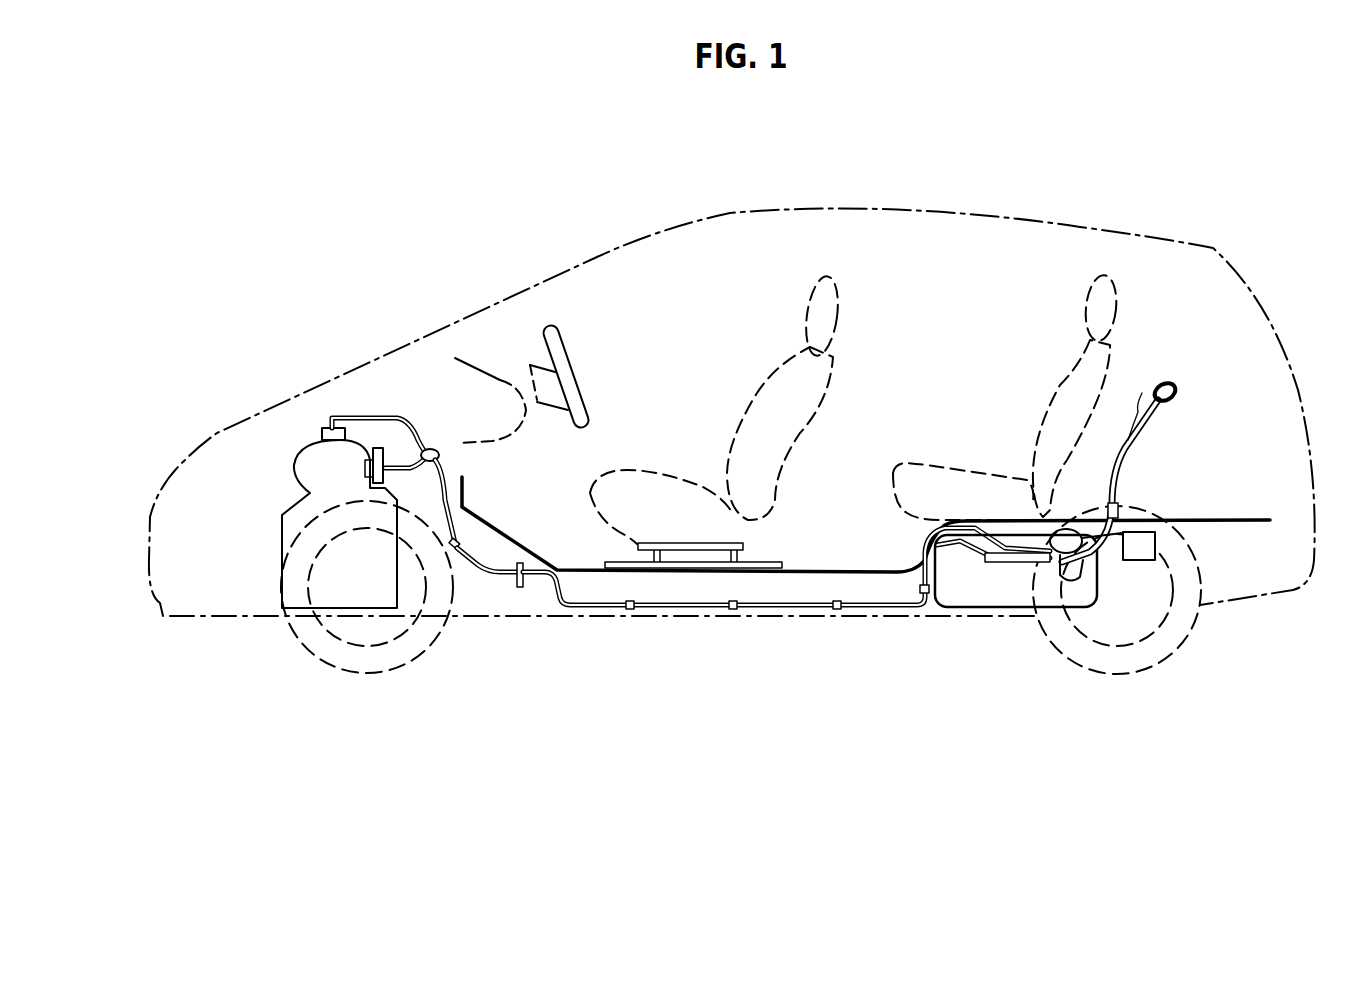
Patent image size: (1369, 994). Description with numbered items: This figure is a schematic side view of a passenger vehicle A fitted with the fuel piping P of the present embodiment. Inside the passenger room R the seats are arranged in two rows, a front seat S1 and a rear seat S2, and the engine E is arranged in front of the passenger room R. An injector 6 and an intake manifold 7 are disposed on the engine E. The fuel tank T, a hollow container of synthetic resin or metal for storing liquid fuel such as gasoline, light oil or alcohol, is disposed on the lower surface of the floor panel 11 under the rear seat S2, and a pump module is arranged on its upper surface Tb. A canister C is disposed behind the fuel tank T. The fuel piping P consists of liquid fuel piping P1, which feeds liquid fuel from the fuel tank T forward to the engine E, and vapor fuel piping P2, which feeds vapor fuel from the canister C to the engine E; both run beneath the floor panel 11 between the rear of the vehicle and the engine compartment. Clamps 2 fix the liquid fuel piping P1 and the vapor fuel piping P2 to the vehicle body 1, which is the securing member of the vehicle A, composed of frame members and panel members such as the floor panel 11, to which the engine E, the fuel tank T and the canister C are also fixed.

The vehicle A is at (538, 195).
The passenger room R is at (853, 238).
The front seat S1 is at (678, 360).
The rear seat S2 is at (966, 362).
The engine E is at (313, 470).
The injector 6 is at (327, 430).
The intake manifold 7 is at (387, 447).
The floor panel 11 is at (1233, 519).
The fuel piping P is at (715, 590).
The liquid fuel piping P1 is at (503, 577).
The vapor fuel piping P2 is at (477, 565).
The clamps 2 is at (523, 588).
The upper surface of the fuel tank Tb is at (926, 592).
The fuel tank T is at (1010, 592).
The vehicle body 1 is at (1186, 485).
The canister C is at (1134, 563).